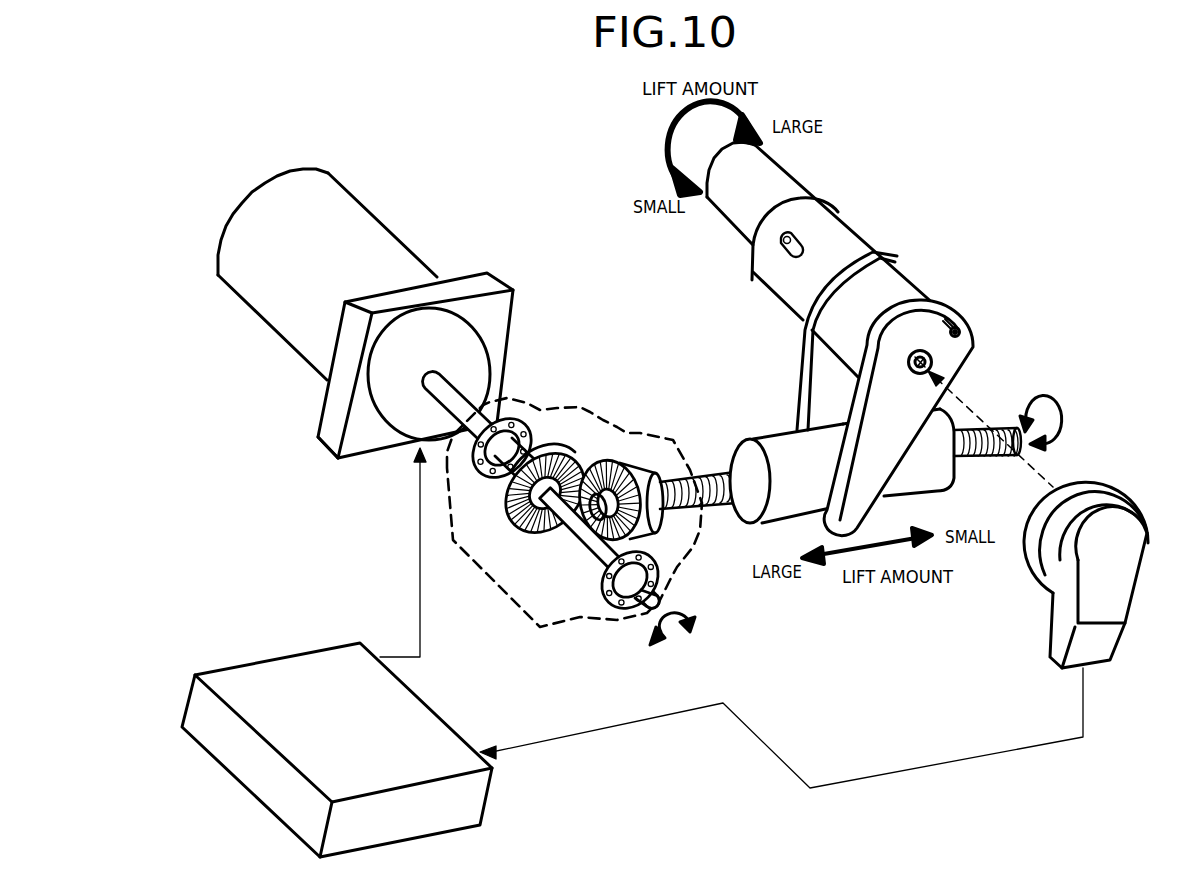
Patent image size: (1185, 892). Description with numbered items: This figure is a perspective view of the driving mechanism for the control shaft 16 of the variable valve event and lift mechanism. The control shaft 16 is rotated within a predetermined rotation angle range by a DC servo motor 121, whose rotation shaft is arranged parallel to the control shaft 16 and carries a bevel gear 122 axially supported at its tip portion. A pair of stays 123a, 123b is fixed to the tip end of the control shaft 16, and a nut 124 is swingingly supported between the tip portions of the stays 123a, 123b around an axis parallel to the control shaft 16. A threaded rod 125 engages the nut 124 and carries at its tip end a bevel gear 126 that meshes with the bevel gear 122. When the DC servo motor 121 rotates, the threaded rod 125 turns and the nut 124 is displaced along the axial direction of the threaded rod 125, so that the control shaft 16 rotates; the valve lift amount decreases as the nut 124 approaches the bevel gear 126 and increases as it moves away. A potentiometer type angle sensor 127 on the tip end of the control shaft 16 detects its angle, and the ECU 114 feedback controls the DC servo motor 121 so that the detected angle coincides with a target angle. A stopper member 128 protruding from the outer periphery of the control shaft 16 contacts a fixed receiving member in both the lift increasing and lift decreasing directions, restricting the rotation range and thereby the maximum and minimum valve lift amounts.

The control shaft 16 is at (747, 217).
The ECU 114 is at (280, 658).
The DC servo motor 121 is at (386, 255).
The bevel gear 122 is at (553, 455).
The stay 123a is at (803, 357).
The stay 123b is at (950, 365).
The nut 124 is at (788, 450).
The threaded rod 125 is at (978, 462).
The bevel gear 126 is at (603, 462).
The angle sensor 127 is at (1117, 492).
The stopper member 128 is at (800, 235).